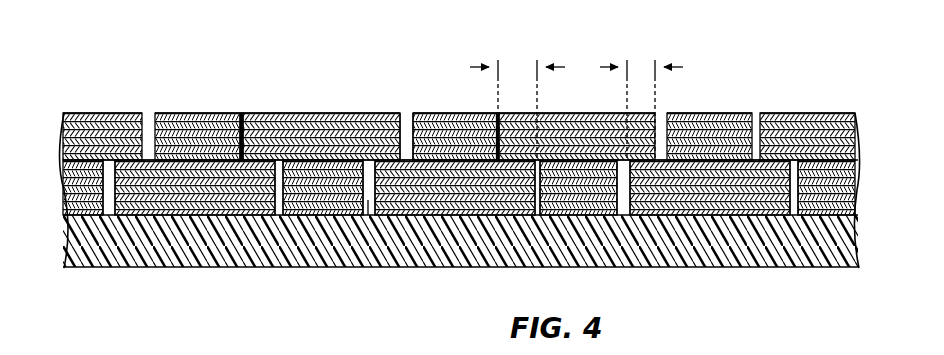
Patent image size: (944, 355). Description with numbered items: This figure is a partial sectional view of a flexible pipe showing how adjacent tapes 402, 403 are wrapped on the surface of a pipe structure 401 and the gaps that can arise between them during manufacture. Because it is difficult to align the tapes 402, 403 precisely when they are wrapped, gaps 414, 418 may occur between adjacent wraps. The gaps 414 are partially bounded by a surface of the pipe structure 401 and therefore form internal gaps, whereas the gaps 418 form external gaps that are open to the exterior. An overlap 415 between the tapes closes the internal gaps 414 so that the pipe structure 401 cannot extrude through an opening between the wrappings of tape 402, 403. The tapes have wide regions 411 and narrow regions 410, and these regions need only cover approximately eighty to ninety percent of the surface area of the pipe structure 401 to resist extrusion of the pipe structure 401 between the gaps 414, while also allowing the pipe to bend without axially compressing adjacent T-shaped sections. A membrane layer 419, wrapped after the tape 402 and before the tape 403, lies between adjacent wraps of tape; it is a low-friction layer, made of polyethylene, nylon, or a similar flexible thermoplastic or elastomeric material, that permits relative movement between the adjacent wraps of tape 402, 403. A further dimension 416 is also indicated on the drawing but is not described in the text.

The pipe structure 401 is at (102, 267).
The tape 402 is at (195, 93).
The tape 403 is at (307, 93).
The narrow regions 410 is at (323, 200).
The wide regions 411 is at (740, 203).
The gaps 414 is at (368, 200).
The overlap 415 is at (642, 65).
The width 416 is at (517, 65).
The gaps 418 is at (405, 113).
The membrane layer 419 is at (275, 204).